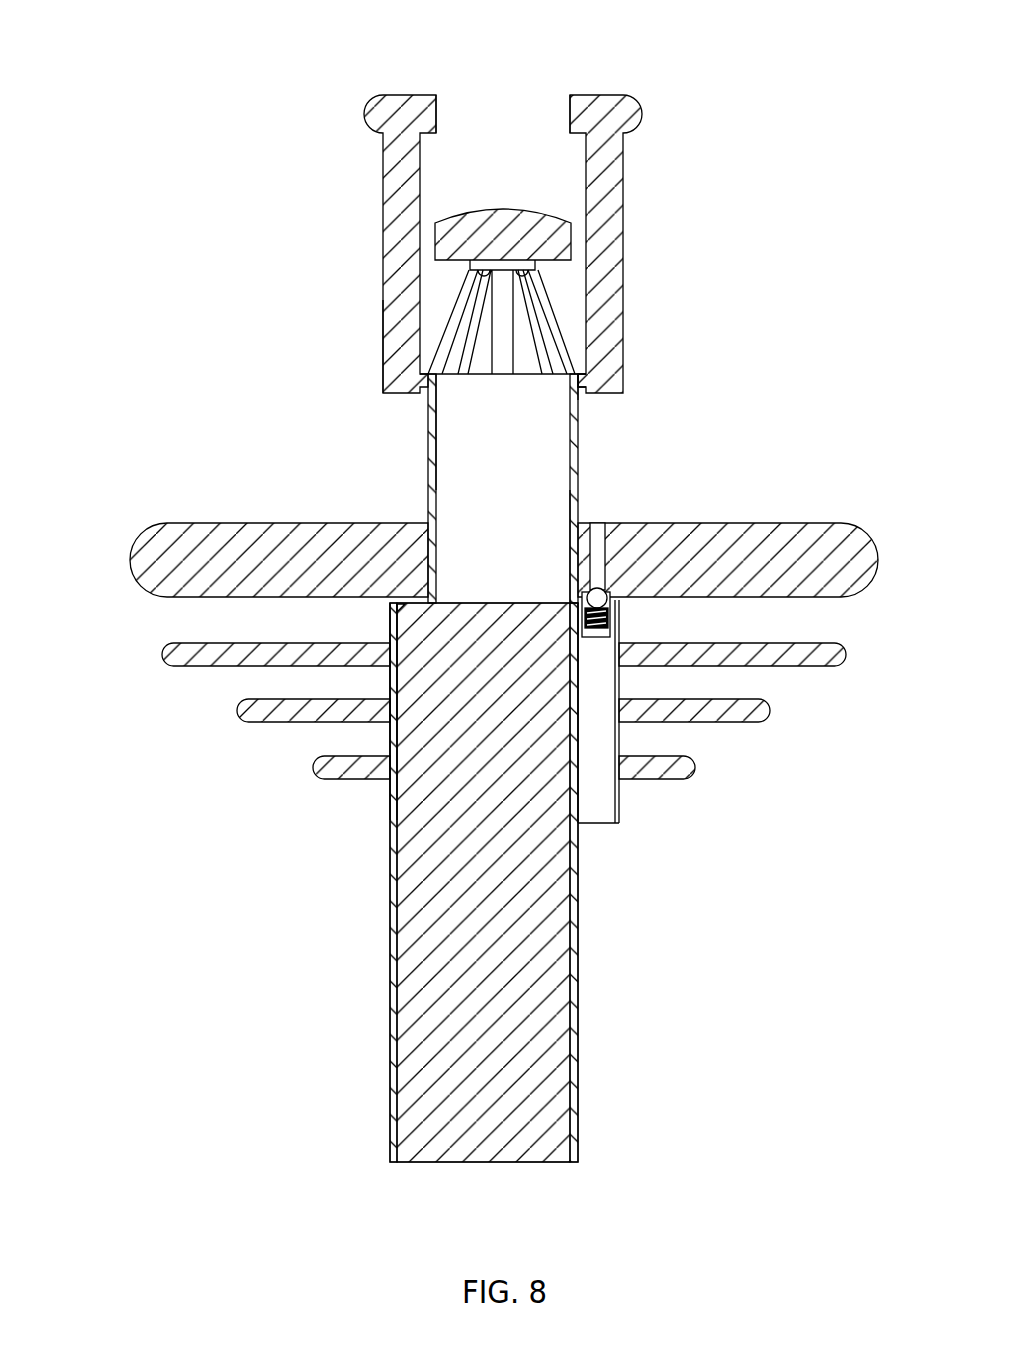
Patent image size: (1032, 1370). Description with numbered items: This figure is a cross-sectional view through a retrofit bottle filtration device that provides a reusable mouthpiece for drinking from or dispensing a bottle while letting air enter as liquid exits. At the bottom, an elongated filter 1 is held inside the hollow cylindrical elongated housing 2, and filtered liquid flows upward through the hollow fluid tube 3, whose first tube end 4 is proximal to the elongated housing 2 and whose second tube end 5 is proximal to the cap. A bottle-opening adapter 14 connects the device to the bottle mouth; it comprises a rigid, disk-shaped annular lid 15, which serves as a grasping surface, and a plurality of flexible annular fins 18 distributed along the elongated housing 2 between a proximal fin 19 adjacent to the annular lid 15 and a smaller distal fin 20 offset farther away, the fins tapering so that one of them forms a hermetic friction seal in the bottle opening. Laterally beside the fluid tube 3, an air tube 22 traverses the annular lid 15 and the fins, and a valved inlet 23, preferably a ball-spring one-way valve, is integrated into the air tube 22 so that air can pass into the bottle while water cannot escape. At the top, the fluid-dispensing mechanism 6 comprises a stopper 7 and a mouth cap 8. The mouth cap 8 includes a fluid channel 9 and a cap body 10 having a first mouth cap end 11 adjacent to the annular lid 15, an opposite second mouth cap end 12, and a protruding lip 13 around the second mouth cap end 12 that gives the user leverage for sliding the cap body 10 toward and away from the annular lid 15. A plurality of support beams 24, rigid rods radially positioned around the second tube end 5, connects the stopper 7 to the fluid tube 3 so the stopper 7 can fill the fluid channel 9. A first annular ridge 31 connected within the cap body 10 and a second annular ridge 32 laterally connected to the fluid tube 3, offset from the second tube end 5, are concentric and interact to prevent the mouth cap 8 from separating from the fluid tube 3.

The elongated filter 1 is at (486, 1148).
The elongated housing 2 is at (432, 933).
The fluid tube 3 is at (503, 488).
The first tube end 4 is at (555, 580).
The second tube end 5 is at (558, 400).
The fluid-dispensing mechanism 6 is at (552, 238).
The stopper 7 is at (472, 228).
The mouth cap 8 is at (490, 238).
The fluid channel 9 is at (503, 108).
The cap body 10 is at (490, 244).
The first mouth cap end 11 is at (363, 343).
The second mouth cap end 12 is at (365, 185).
The protruding lip 13 is at (612, 230).
The bottle-opening adapter 14 is at (474, 819).
The annular lid 15 is at (848, 547).
The plurality of flexible annular fins 18 is at (464, 734).
The proximal fin 19 is at (185, 662).
The distal fin 20 is at (333, 772).
The air tube 22 is at (597, 567).
The valved inlet 23 is at (602, 838).
The plurality of support beams 24 is at (560, 345).
The first annular ridge 31 is at (580, 397).
The second annular ridge 32 is at (582, 388).